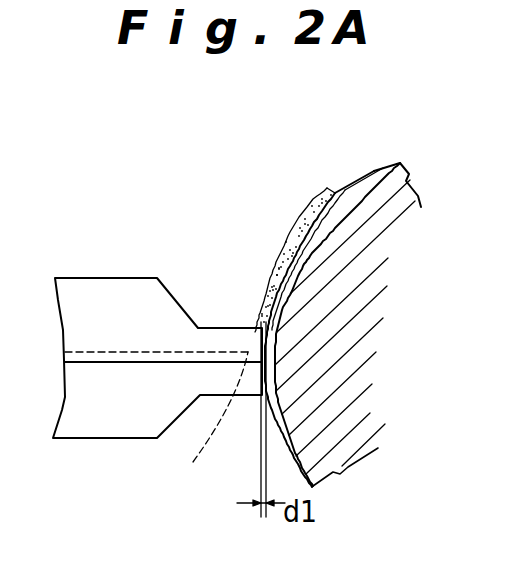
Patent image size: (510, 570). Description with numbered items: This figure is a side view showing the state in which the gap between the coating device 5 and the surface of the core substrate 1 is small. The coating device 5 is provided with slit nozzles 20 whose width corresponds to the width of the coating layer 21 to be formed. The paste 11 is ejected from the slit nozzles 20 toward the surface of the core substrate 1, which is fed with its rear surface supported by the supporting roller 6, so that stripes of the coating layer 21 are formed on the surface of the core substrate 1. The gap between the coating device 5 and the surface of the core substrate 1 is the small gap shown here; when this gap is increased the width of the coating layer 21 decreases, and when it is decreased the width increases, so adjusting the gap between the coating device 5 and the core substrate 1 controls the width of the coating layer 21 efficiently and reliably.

The core substrate 1 is at (358, 177).
The coating device 5 is at (107, 303).
The supporting roller 6 is at (360, 432).
The paste 11 is at (274, 298).
The slit nozzle 20 is at (209, 427).
The coating layer 21 is at (272, 258).